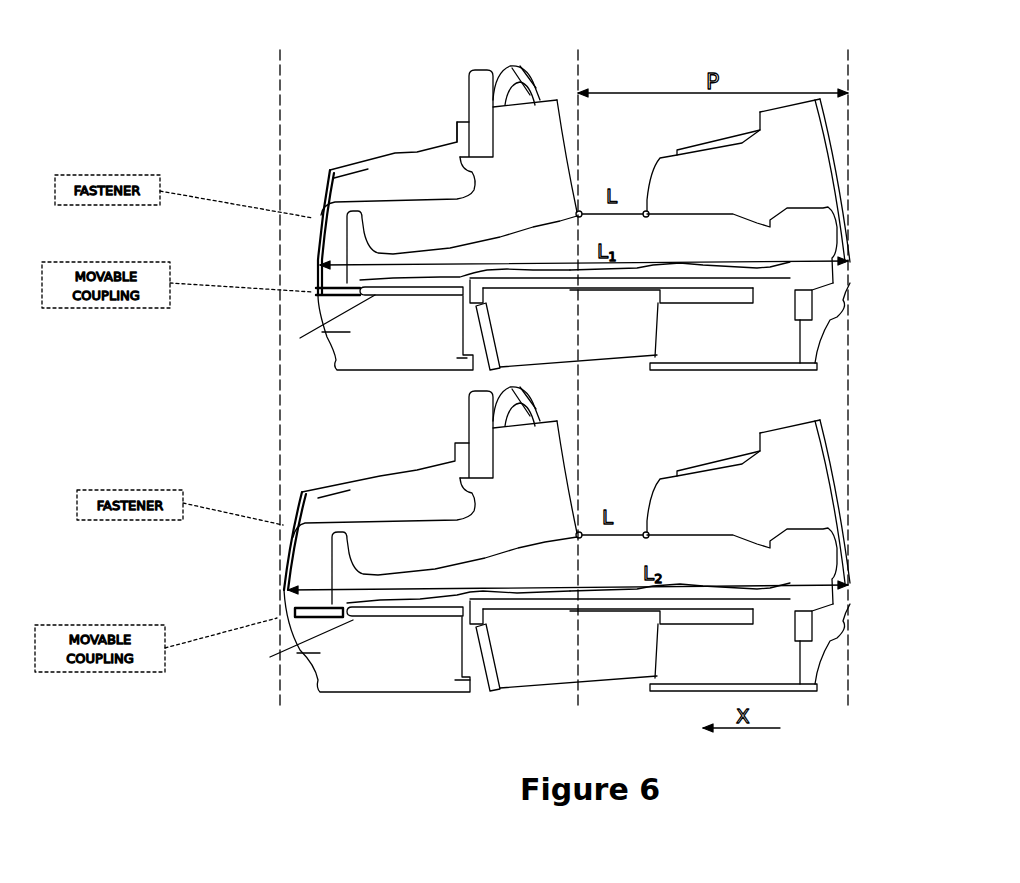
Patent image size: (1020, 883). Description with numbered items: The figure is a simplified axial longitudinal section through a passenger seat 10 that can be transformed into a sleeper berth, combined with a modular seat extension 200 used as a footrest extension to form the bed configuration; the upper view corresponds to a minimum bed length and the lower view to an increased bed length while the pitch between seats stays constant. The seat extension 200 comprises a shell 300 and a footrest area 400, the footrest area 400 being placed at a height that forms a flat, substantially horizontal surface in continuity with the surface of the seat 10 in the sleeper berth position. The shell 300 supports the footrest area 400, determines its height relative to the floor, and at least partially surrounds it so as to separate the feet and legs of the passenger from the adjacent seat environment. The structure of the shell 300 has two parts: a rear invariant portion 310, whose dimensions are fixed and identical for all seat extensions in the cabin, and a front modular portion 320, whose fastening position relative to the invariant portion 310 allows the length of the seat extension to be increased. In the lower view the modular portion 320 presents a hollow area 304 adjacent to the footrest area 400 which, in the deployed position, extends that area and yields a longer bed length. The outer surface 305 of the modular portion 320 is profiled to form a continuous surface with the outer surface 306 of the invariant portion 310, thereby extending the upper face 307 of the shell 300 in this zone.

The seat 10 is at (847, 150).
The seat extension 200 is at (353, 357).
The shell 300 is at (392, 356).
The hollow area 304 is at (307, 572).
The outer surface of the modular portion 305 is at (330, 172).
The outer surface of the invariant portion 306 is at (437, 146).
The upper face of the shell 307 is at (343, 145).
The rear invariant portion 310 is at (344, 306).
The front modular portion 320 is at (313, 253).
The footrest area 400 is at (301, 489).